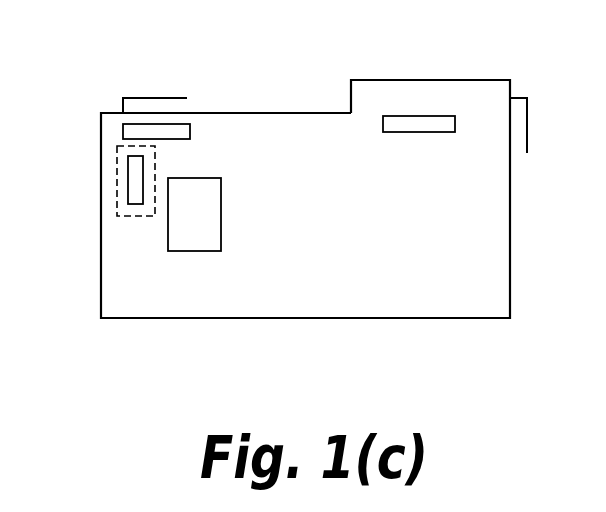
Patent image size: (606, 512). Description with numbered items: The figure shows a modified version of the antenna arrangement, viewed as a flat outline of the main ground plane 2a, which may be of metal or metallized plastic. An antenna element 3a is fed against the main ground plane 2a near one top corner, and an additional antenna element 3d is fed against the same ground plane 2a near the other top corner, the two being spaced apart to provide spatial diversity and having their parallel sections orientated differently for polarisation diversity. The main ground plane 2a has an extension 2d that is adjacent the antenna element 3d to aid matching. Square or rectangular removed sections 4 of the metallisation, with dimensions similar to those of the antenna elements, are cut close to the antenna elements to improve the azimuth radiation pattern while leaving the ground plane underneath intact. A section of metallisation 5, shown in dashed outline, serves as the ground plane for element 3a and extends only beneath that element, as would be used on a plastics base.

The main ground plane 2a is at (273, 302).
The extension 2d is at (423, 92).
The antenna element 3a is at (122, 180).
The additional antenna element 3d is at (413, 127).
The removed sections 4 is at (190, 132).
The section of metallisation 5 is at (138, 218).